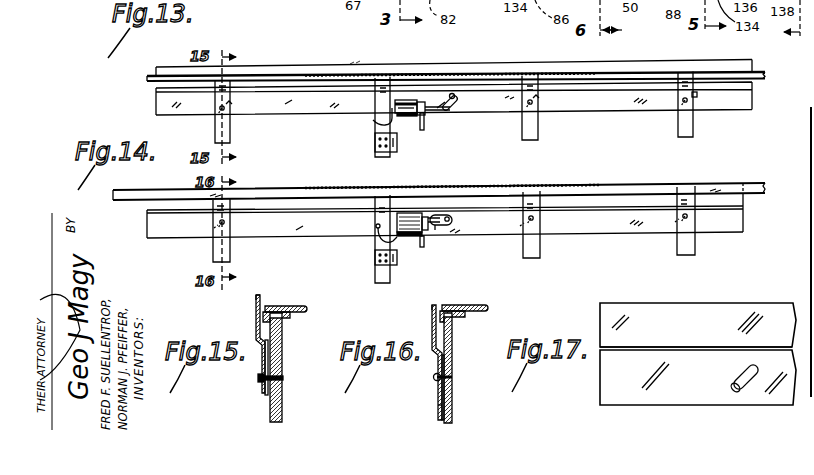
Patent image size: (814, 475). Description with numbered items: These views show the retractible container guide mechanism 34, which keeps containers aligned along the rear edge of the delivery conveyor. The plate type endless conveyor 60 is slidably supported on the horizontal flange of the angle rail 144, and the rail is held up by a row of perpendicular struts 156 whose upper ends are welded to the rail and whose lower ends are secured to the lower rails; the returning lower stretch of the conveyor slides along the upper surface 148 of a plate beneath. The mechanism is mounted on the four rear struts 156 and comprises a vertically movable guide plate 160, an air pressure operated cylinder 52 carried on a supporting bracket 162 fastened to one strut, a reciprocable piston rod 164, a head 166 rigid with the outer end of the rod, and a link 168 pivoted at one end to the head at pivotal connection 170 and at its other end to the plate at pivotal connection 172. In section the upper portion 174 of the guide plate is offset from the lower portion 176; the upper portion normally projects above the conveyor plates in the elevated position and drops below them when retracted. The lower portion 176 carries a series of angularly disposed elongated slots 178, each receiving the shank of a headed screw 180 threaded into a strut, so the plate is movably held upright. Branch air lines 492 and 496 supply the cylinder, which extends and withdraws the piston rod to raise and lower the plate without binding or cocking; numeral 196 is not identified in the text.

In FIG. 13, the retractible container guide mechanism 34 is at (296, 60).
In FIG. 14, the retractible container guide mechanism 34 is at (192, 244).
In FIG. 15, the retractible container guide mechanism 34 is at (254, 394).
In FIG. 16, the retractible container guide mechanism 34 is at (511, 315).
In FIG. 13, the air pressure operated cylinder 52 is at (401, 100).
In FIG. 14, the air pressure operated cylinder 52 is at (408, 213).
In FIG. 13, the plate type endless conveyor 60 is at (554, 70).
In FIG. 14, the plate type endless conveyor 60 is at (565, 184).
In FIG. 15, the plate type endless conveyor 60 is at (304, 309).
In FIG. 16, the plate type endless conveyor 60 is at (490, 308).
In FIG. 13, the angle rail 144 is at (147, 79).
In FIG. 14, the angle rail 144 is at (284, 197).
In FIG. 15, the angle rail 144 is at (292, 314).
In FIG. 16, the angle rail 144 is at (462, 318).
In FIG. 14, the upper surface of plate 148 is at (811, 253).
In FIG. 13, the perpendicular struts 156 is at (231, 129).
In FIG. 14, the perpendicular struts 156 is at (231, 257).
In FIG. 15, the perpendicular struts 156 is at (283, 350).
In FIG. 16, the perpendicular struts 156 is at (455, 395).
In FIG. 13, the guide plate 160 is at (156, 98).
In FIG. 14, the guide plate 160 is at (147, 228).
In FIG. 15, the guide plate 160 is at (258, 298).
In FIG. 16, the guide plate 160 is at (438, 405).
In FIG. 17, the guide plate 160 is at (600, 376).
In FIG. 13, the supporting bracket 162 is at (398, 143).
In FIG. 14, the supporting bracket 162 is at (375, 257).
In FIG. 13, the piston rod 164 is at (425, 114).
In FIG. 14, the piston rod 164 is at (425, 223).
In FIG. 13, the head 166 is at (430, 111).
In FIG. 14, the head 166 is at (432, 216).
In FIG. 13, the link 168 is at (456, 101).
In FIG. 14, the link 168 is at (441, 226).
In FIG. 13, the pivotal connection 170 is at (437, 108).
In FIG. 14, the pivotal connection 170 is at (435, 226).
In FIG. 13, the pivotal connection 172 is at (453, 93).
In FIG. 14, the pivotal connection 172 is at (452, 226).
In FIG. 13, the upper portion of guide plate 174 is at (753, 65).
In FIG. 14, the upper portion of guide plate 174 is at (736, 205).
In FIG. 15, the upper portion of guide plate 174 is at (256, 307).
In FIG. 16, the upper portion of guide plate 174 is at (432, 310).
In FIG. 17, the upper portion of guide plate 174 is at (650, 315).
In FIG. 13, the lower portion of guide plate 176 is at (290, 108).
In FIG. 14, the lower portion of guide plate 176 is at (300, 231).
In FIG. 15, the lower portion of guide plate 176 is at (264, 366).
In FIG. 16, the lower portion of guide plate 176 is at (440, 367).
In FIG. 17, the lower portion of guide plate 176 is at (620, 393).
In FIG. 13, the elongated slots 178 is at (232, 104).
In FIG. 14, the elongated slots 178 is at (213, 228).
In FIG. 15, the elongated slots 178 is at (283, 374).
In FIG. 16, the elongated slots 178 is at (440, 384).
In FIG. 17, the elongated slots 178 is at (738, 392).
In FIG. 13, the headed screw 180 is at (214, 110).
In FIG. 14, the headed screw 180 is at (379, 224).
In FIG. 15, the headed screw 180 is at (259, 379).
In FIG. 16, the headed screw 180 is at (434, 378).
In FIG. 14, the rod 196 is at (415, 242).
In FIG. 13, the branch line 492 is at (374, 121).
In FIG. 13, the branch line 496 is at (424, 128).